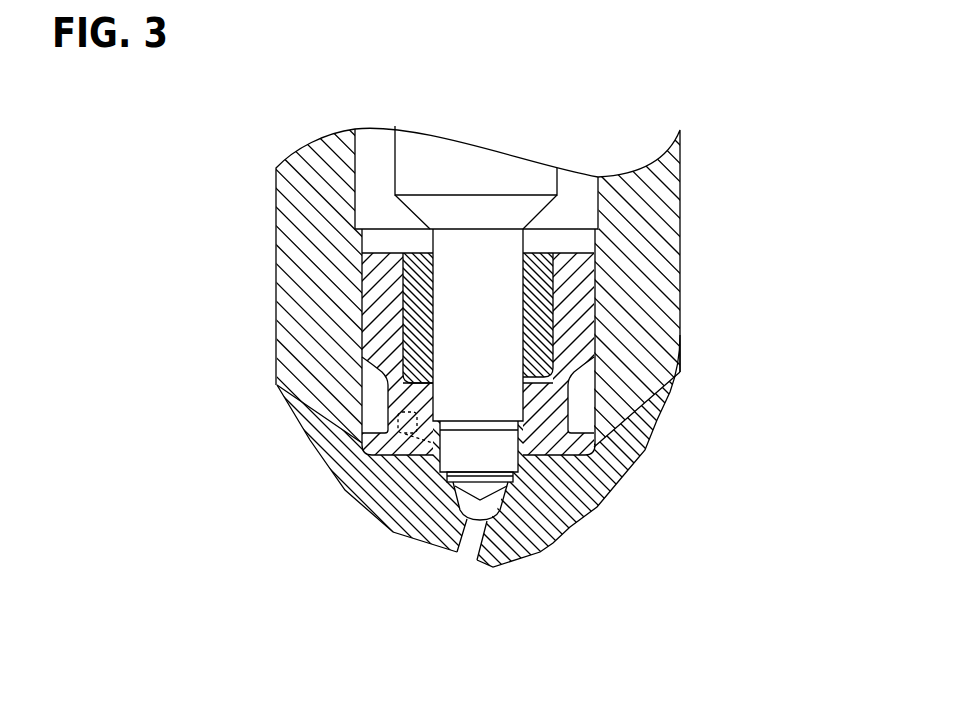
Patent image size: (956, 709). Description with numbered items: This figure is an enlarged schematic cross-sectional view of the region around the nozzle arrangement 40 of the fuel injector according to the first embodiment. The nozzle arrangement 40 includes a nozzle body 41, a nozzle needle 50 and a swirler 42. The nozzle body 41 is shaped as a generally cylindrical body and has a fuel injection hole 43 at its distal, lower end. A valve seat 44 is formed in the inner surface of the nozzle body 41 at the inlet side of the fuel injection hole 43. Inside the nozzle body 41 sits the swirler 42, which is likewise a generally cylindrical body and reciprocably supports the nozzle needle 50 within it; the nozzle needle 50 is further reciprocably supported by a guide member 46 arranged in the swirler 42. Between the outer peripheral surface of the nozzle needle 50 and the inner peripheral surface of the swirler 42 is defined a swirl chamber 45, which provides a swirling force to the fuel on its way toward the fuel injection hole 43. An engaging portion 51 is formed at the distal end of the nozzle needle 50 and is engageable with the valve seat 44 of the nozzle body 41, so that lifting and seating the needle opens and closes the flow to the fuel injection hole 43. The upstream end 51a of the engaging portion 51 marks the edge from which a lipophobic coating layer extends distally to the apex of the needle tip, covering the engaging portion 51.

The nozzle arrangement 40 is at (302, 141).
The nozzle body 41 is at (288, 316).
The swirler 42 is at (395, 410).
The fuel injection hole 43 is at (462, 552).
The valve seat 44 is at (395, 531).
The swirl chamber 45 is at (433, 463).
The guide member 46 is at (540, 334).
The nozzle needle 50 is at (487, 243).
The engaging portion 51 is at (493, 471).
The upstream end of the engaging portion 51a is at (537, 508).